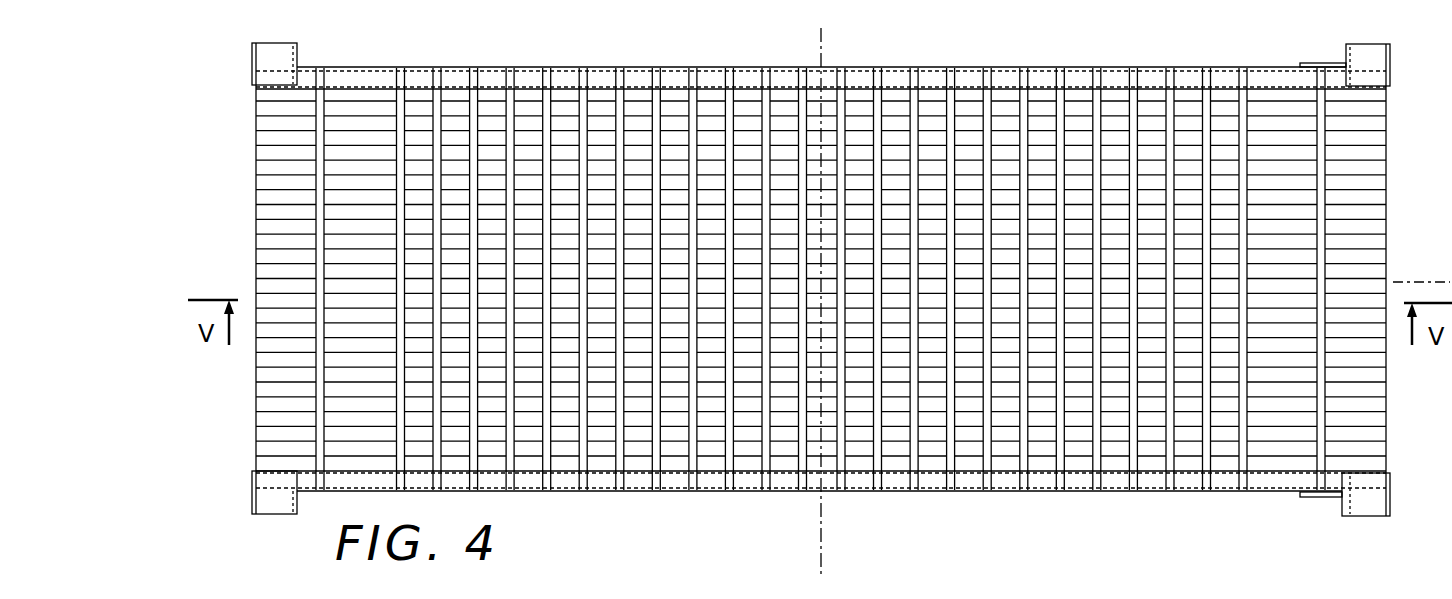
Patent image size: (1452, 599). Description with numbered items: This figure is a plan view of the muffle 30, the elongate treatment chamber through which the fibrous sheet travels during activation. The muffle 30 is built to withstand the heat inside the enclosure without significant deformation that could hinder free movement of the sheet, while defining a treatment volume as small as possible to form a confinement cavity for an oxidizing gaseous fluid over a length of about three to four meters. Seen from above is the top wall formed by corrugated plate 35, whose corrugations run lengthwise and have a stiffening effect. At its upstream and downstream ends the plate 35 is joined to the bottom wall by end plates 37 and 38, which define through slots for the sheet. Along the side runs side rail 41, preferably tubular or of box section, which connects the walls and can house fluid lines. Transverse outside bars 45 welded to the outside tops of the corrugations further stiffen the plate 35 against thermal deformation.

The muffle 30 is at (1088, 61).
The plate 35 is at (367, 120).
The end plate 37 is at (253, 105).
The end plate 38 is at (1391, 55).
The side rail 41 is at (893, 82).
The outside bar 45 is at (625, 123).